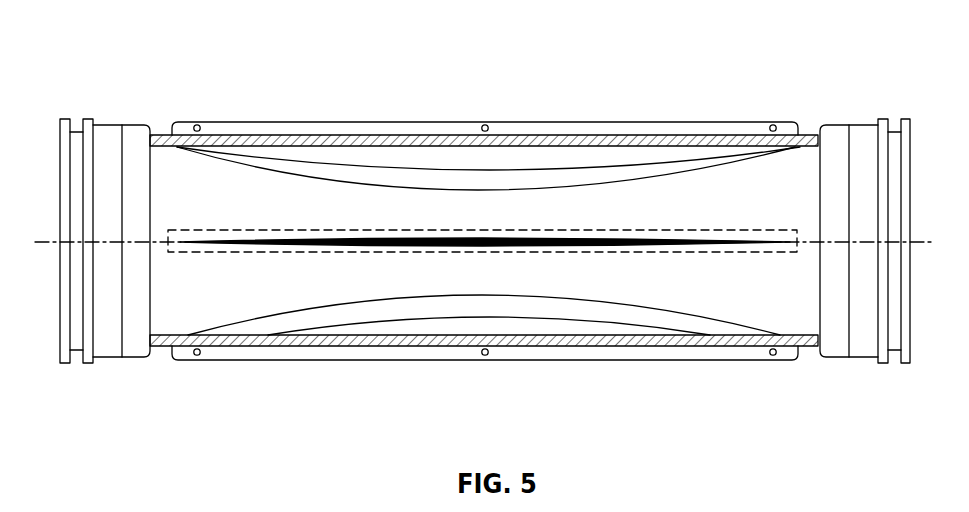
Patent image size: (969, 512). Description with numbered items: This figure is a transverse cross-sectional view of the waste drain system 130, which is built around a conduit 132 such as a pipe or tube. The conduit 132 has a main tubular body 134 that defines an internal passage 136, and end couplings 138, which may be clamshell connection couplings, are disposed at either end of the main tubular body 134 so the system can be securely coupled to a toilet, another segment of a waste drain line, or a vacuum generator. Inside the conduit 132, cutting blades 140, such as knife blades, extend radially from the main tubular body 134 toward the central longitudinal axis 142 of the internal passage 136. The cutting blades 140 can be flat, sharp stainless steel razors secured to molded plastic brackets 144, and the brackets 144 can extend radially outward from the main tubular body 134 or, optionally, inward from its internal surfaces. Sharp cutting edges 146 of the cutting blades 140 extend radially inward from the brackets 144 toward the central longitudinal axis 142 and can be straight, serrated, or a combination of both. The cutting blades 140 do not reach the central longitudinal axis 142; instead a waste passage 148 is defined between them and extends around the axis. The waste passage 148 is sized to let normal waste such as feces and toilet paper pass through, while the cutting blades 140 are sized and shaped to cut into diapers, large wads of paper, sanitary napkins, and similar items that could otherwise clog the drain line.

The waste drain system 130 is at (128, 63).
The conduit 132 is at (775, 88).
The main tubular body 134 is at (808, 135).
The internal passage 136 is at (260, 186).
The end couplings 138 is at (88, 119).
The cutting blades 140 is at (597, 183).
The central longitudinal axis 142 is at (800, 242).
The brackets 144 is at (417, 122).
The sharp cutting edges 146 is at (472, 190).
The waste passage 148 is at (333, 197).